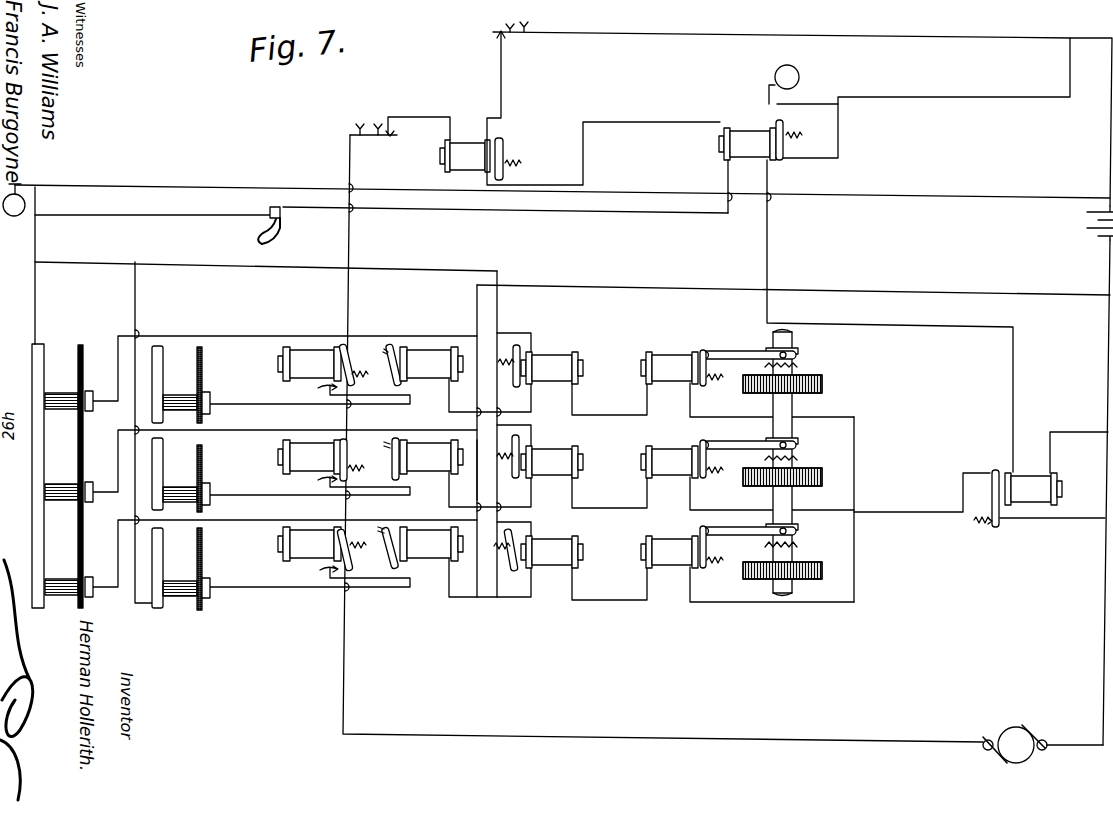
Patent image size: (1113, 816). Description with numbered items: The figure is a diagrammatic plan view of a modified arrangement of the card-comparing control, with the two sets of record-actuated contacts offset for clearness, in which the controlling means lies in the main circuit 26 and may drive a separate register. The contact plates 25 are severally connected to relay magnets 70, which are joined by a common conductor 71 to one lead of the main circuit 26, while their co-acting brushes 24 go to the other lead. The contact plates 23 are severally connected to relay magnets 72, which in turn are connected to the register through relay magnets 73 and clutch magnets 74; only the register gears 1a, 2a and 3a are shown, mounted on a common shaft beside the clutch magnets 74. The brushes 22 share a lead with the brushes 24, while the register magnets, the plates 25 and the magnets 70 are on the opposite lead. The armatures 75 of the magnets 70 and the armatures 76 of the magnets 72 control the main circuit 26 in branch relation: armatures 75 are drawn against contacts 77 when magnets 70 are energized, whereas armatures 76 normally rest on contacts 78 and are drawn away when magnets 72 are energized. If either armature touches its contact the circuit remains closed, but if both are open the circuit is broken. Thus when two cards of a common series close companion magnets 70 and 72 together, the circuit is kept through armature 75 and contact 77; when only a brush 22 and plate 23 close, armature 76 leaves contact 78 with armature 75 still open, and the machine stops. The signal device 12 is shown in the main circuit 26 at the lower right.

The signal indicator 12 is at (1015, 727).
The brushes 22 is at (182, 391).
The contact plates 23 is at (211, 413).
The brushes 24 is at (64, 389).
The contact plates 25 is at (91, 411).
The main circuit 26 is at (1110, 172).
The relay magnets 70 is at (313, 347).
The common conductor 71 is at (476, 468).
The relay magnets 72 is at (433, 382).
The relay magnets 73 is at (553, 384).
The clutch magnets 74 is at (672, 384).
The armatures 75 is at (358, 459).
The armatures 76 is at (388, 372).
The contacts 77 is at (314, 485).
The contacts 78 is at (388, 349).
The gear 1a is at (822, 569).
The gear 2a is at (822, 476).
The gear 3a is at (822, 383).